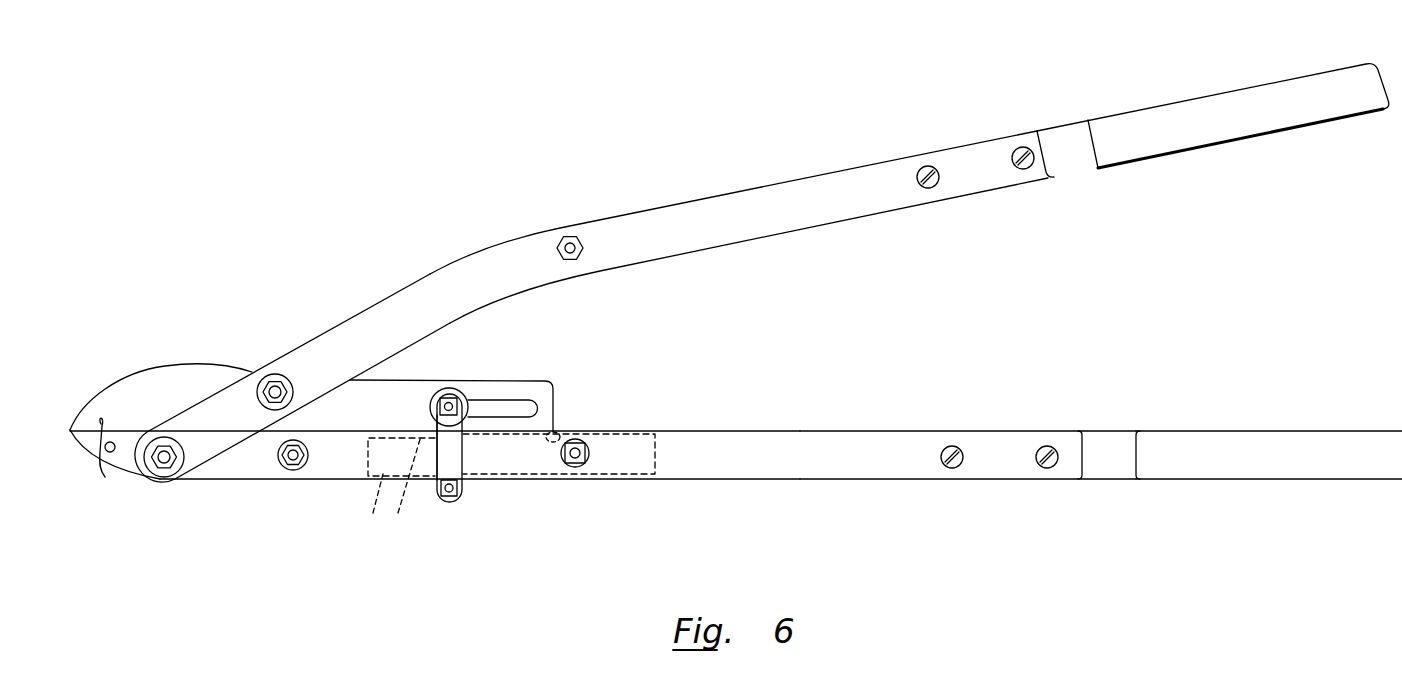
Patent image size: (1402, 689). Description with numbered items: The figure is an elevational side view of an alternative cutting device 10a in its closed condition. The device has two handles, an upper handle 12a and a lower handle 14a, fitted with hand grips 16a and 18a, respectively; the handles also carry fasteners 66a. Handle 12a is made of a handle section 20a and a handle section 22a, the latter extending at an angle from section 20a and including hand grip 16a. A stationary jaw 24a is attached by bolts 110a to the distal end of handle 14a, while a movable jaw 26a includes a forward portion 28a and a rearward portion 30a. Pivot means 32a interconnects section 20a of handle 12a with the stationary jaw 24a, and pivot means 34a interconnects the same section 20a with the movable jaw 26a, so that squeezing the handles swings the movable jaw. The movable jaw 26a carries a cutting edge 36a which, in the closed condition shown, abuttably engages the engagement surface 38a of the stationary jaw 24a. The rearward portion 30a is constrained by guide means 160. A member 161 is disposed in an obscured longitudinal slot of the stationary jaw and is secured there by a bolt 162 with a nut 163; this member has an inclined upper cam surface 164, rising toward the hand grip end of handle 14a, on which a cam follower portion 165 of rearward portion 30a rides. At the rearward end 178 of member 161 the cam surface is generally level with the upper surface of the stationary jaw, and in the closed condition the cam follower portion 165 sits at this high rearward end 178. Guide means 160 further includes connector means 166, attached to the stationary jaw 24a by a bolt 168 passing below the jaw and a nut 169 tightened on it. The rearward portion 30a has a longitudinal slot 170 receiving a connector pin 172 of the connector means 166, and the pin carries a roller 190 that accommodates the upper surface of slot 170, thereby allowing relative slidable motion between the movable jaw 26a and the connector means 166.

The cutting device 10a is at (305, 138).
The handle 12a is at (860, 221).
The handle 14a is at (1100, 483).
The hand grip 16a is at (1220, 143).
The hand grip 18a is at (1226, 437).
The handle section 20a is at (357, 315).
The handle section 22a is at (628, 218).
The stationary jaw 24a is at (213, 482).
The movable jaw 26a is at (198, 361).
The forward portion 28a is at (190, 365).
The rearward portion 30a is at (503, 383).
The pivot means 32a is at (157, 470).
The pivot means 34a is at (273, 377).
The cutting edge 36a is at (108, 395).
The engagement surface 38a is at (106, 474).
The screws 66a is at (939, 187).
The bolts 110a is at (1039, 446).
The guide means 160 is at (482, 486).
The member 161 is at (363, 502).
The bolt 162 is at (589, 455).
The nut 163 is at (578, 466).
The cam surface 164 is at (410, 483).
The cam follower portion 165 is at (560, 430).
The connector means 166 is at (432, 425).
The bolt 168 is at (444, 500).
The nut 169 is at (450, 491).
The longitudinal slot 170 is at (553, 381).
The connector pin 172 is at (448, 400).
The rearward end 178 is at (657, 437).
The roller 190 is at (459, 395).